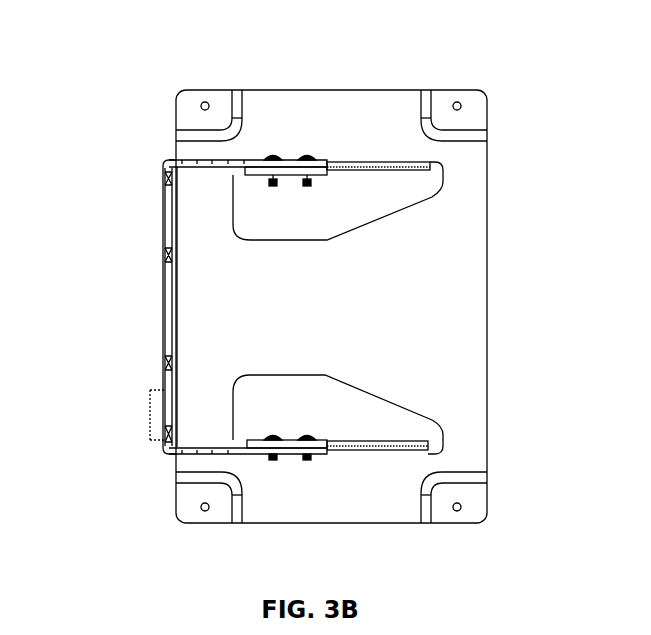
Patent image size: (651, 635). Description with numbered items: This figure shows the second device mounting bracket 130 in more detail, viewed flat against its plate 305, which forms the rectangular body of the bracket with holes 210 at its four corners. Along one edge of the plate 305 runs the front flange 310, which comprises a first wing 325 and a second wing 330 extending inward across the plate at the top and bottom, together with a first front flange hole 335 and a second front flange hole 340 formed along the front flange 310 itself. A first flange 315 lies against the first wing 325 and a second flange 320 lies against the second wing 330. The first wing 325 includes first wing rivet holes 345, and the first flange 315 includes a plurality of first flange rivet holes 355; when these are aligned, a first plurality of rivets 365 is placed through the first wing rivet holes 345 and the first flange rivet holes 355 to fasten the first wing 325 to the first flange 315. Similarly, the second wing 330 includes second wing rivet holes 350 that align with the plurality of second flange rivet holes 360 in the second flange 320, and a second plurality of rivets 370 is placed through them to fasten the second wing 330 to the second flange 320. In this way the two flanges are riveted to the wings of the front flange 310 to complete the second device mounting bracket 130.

The second device mounting bracket 130 is at (112, 32).
The mounting holes / corner tabs 210 is at (200, 104).
The plate 305 is at (488, 263).
The front flange 310 is at (132, 307).
The first flange 315 is at (338, 158).
The second flange 320 is at (338, 475).
The first wing 325 is at (192, 160).
The second wing 330 is at (190, 451).
The first front flange hole 335 is at (165, 218).
The second front flange hole 340 is at (164, 388).
The first wing rivet holes 345 is at (307, 153).
The second wing rivet holes 350 is at (289, 456).
The first flange rivet holes 355 is at (288, 175).
The second flange rivet holes 360 is at (273, 431).
The first plurality of rivets 365 is at (307, 187).
The second plurality of rivets 370 is at (305, 461).